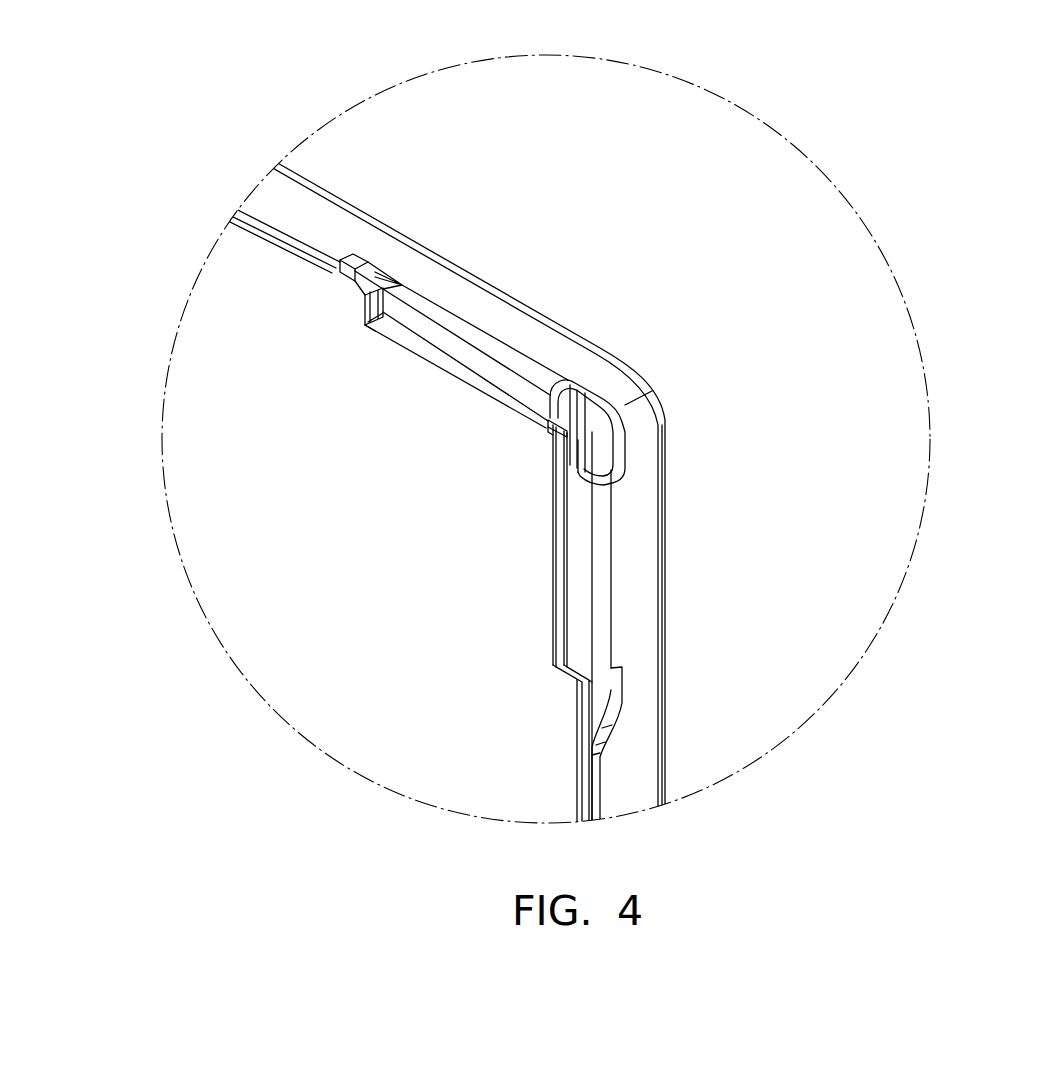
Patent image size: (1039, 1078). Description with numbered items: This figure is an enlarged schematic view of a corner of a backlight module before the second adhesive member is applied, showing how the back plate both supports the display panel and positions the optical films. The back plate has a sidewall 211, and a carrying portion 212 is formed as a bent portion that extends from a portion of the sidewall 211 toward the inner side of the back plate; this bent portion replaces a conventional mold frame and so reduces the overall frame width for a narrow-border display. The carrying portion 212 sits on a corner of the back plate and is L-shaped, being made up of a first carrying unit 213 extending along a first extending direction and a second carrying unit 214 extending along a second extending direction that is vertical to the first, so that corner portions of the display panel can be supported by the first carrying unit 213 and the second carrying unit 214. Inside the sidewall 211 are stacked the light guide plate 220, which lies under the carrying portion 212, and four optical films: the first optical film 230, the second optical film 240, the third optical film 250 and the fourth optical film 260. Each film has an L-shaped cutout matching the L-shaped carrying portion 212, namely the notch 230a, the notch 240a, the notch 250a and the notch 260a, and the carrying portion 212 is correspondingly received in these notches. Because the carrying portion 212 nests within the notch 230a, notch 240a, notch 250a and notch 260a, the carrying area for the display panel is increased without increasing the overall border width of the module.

The sidewall 211 is at (518, 328).
The carrying portion 212 is at (523, 395).
The first carrying unit 213 is at (418, 340).
The second carrying unit 214 is at (580, 645).
The light guide plate 220 is at (625, 405).
The first optical film 230 is at (573, 418).
The notch 230a is at (582, 438).
The second optical film 240 is at (567, 465).
The notch 240a is at (377, 335).
The third optical film 250 is at (560, 530).
The notch 250a is at (375, 305).
The fourth optical film 260 is at (555, 580).
The notch 260a is at (365, 312).